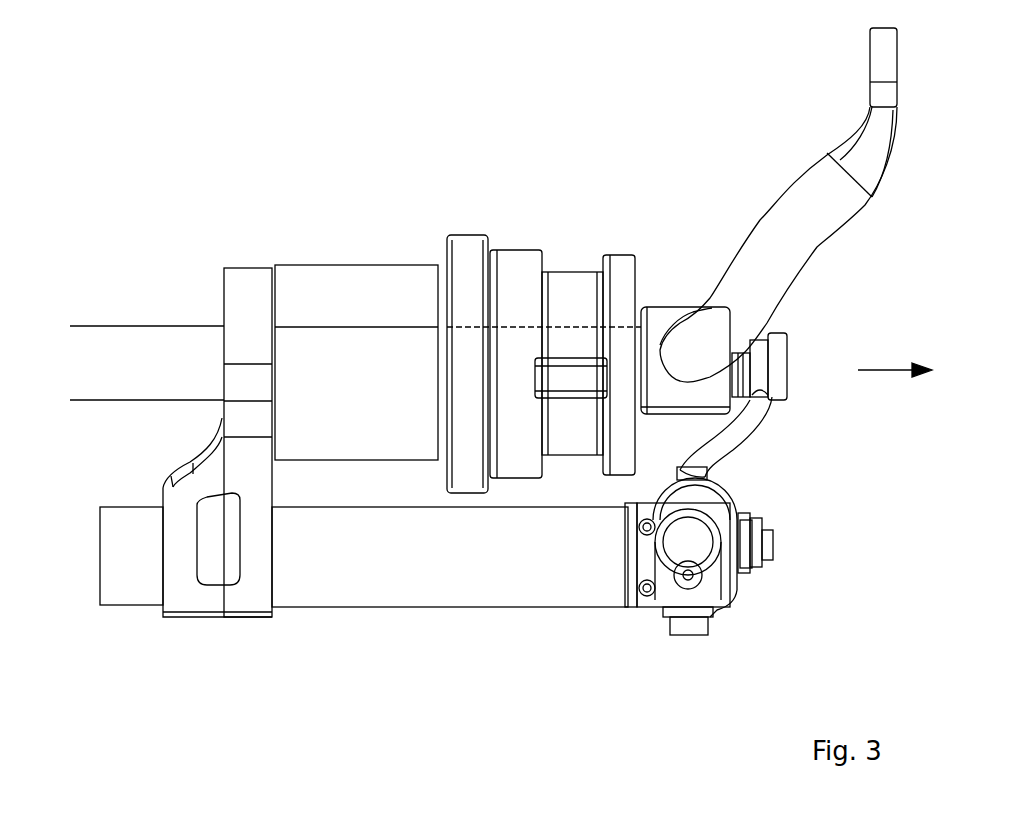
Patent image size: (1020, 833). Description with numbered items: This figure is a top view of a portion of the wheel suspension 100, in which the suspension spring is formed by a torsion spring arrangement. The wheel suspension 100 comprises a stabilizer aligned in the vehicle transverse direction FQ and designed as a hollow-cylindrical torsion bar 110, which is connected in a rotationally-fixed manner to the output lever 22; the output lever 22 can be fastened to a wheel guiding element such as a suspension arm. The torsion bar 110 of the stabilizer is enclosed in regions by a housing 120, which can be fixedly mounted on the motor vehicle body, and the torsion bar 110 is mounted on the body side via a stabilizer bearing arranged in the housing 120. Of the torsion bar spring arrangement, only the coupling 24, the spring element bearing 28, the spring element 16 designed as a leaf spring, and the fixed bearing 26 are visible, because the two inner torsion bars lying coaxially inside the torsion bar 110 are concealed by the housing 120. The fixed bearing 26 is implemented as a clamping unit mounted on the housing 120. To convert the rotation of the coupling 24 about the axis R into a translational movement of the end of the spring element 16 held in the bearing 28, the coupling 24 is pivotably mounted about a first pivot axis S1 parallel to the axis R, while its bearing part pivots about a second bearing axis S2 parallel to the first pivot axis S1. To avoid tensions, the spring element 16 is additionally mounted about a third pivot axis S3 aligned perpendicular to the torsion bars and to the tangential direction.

The wheel suspension 100 is at (132, 82).
The torsion bar 110 is at (95, 330).
The housing 120 is at (375, 300).
The output lever 22 is at (780, 223).
The axis R is at (787, 370).
The vehicle transverse direction FQ is at (895, 359).
The coupling 24 is at (750, 427).
The spring element bearing 28 is at (753, 607).
The first pivot axis S1 is at (773, 538).
The second bearing axis S2 is at (777, 548).
The third pivot axis S3 is at (687, 640).
The spring element 16 is at (400, 607).
The fixed bearing 26 is at (187, 578).